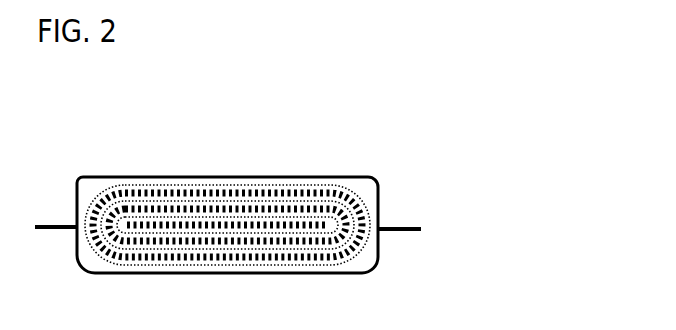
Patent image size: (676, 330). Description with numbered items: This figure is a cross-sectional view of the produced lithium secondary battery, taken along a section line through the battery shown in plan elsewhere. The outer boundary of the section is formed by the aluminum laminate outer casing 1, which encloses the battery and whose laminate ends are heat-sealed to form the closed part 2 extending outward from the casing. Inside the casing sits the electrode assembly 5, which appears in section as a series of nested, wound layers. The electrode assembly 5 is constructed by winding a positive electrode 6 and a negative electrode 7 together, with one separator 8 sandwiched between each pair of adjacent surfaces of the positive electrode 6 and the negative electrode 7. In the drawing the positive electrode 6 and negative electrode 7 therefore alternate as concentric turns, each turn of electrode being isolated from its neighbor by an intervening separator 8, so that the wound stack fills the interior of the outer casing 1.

The aluminum laminate outer casing 1 is at (95, 176).
The closed part 2 is at (399, 226).
The electrode assembly 5 is at (198, 181).
The positive electrode 6 is at (283, 178).
The negative electrode 7 is at (340, 197).
The separator 8 is at (367, 215).